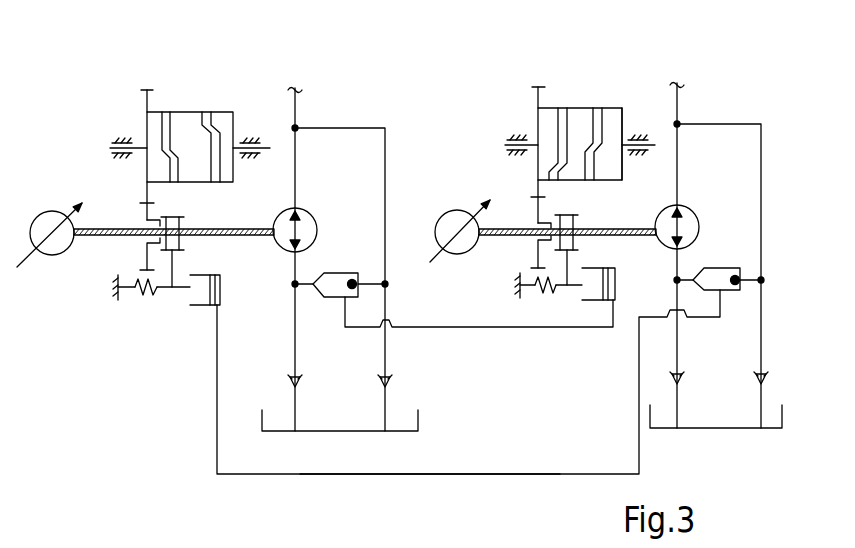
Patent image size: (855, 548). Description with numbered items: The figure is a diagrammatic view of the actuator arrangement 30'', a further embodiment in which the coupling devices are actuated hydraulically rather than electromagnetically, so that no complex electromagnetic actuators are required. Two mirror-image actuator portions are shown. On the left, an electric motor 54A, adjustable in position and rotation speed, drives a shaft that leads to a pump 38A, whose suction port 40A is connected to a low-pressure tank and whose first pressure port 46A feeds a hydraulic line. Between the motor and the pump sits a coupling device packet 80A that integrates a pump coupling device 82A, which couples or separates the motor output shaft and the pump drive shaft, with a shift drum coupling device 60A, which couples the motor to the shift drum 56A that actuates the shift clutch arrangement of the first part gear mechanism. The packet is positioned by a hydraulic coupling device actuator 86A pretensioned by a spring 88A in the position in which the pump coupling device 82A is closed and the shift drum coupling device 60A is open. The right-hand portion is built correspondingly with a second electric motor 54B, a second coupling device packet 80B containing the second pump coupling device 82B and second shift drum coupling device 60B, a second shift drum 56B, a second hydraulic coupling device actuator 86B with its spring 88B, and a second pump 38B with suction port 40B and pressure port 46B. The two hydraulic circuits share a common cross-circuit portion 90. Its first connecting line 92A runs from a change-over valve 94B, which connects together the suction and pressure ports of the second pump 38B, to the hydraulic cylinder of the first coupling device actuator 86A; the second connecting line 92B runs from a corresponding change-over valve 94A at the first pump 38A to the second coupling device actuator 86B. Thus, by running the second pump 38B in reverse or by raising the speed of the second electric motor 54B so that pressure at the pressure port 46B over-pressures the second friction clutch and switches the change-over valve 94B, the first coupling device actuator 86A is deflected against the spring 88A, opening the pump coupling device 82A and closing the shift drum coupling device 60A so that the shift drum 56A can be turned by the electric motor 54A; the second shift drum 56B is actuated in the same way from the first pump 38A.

The actuator arrangement 30'' is at (658, 99).
The shift drum 56A is at (147, 116).
The second shift drum 56B is at (540, 118).
The electric motor 54A is at (53, 211).
The second electric motor 54B is at (452, 210).
The shift drum coupling device 60A is at (155, 225).
The second shift drum coupling device 60B is at (557, 220).
The coupling device packet 80A is at (143, 252).
The second coupling device packet 80B is at (532, 247).
The pump coupling device 82A is at (182, 223).
The second pump coupling device 82B is at (577, 217).
The spring 88A is at (150, 294).
The spring 88B is at (540, 293).
The hydraulic coupling device actuator 86A is at (193, 312).
The second hydraulic coupling device actuator 86B is at (598, 303).
The first connecting line 92A is at (267, 475).
The second connecting line 92B is at (465, 328).
The cross-circuit portion 90 is at (430, 480).
The first pressure port 46A is at (296, 110).
The pressure port 46B is at (678, 98).
The pump 38A is at (307, 216).
The second pump 38B is at (690, 205).
The change-over valve 94A is at (352, 273).
The change-over valve 94B is at (733, 268).
The suction port 40A is at (295, 343).
The suction port 40B is at (678, 340).